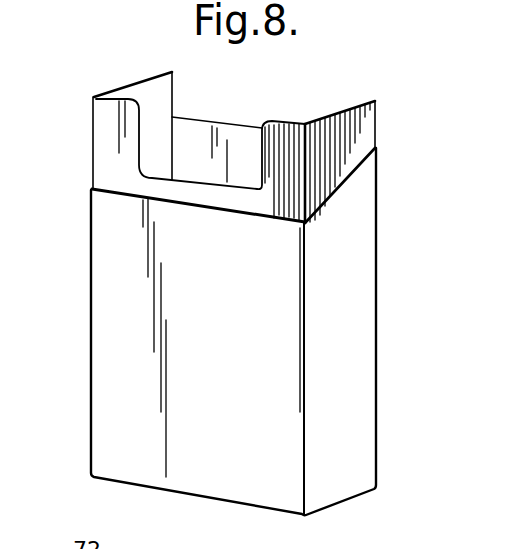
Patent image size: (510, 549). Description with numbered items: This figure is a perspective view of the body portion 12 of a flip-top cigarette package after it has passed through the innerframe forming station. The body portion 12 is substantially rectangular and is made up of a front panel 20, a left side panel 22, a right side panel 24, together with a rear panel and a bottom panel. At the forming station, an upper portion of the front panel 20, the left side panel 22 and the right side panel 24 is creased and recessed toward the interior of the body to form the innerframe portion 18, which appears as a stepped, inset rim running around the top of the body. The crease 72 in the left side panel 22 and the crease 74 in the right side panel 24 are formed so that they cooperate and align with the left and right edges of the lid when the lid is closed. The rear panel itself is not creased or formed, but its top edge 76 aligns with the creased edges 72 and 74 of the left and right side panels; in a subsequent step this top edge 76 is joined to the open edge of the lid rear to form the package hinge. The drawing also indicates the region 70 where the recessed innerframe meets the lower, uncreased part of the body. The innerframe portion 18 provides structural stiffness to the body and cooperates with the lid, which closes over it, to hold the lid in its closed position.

The body portion 12 is at (70, 291).
The innerframe portion 18 is at (73, 143).
The front panel 20 is at (208, 332).
The left side panel 22 is at (143, 95).
The right side panel 24 is at (343, 130).
The upper edge of container 70 is at (171, 202).
The crease of the left panel 72 is at (156, 140).
The crease of the right panel 74 is at (343, 188).
The top edge of the rear panel 76 is at (223, 122).